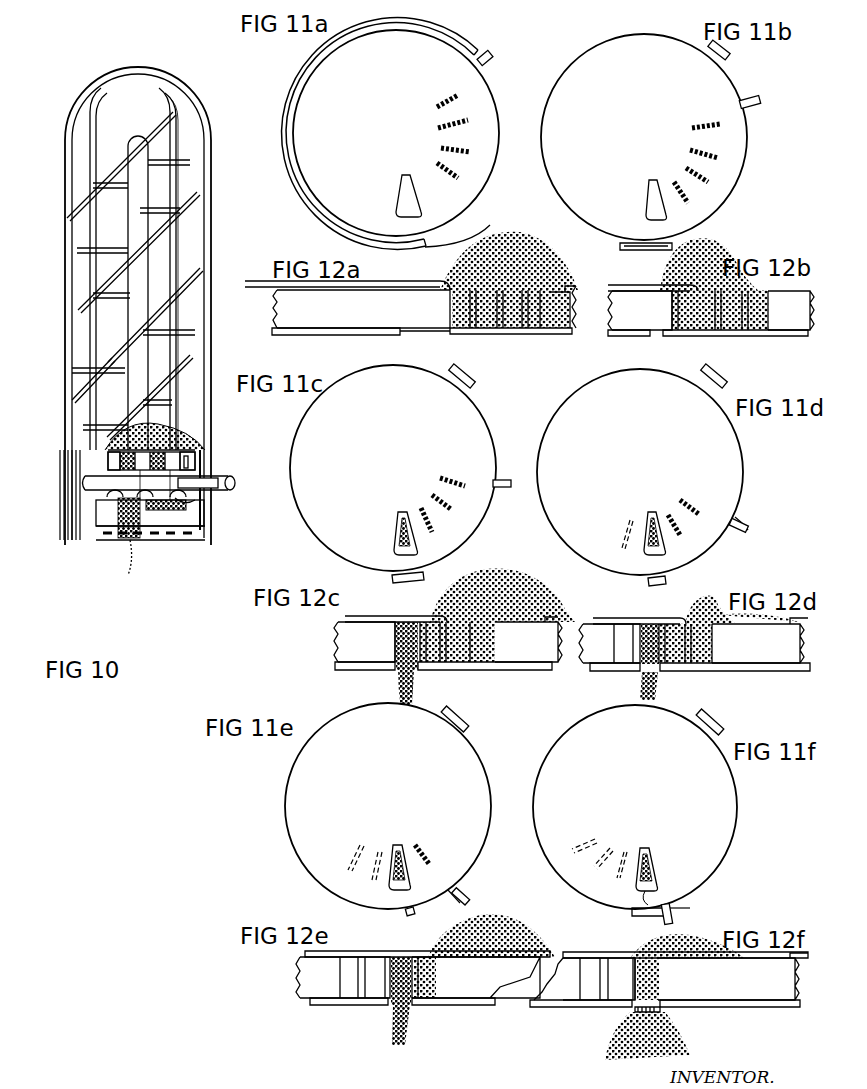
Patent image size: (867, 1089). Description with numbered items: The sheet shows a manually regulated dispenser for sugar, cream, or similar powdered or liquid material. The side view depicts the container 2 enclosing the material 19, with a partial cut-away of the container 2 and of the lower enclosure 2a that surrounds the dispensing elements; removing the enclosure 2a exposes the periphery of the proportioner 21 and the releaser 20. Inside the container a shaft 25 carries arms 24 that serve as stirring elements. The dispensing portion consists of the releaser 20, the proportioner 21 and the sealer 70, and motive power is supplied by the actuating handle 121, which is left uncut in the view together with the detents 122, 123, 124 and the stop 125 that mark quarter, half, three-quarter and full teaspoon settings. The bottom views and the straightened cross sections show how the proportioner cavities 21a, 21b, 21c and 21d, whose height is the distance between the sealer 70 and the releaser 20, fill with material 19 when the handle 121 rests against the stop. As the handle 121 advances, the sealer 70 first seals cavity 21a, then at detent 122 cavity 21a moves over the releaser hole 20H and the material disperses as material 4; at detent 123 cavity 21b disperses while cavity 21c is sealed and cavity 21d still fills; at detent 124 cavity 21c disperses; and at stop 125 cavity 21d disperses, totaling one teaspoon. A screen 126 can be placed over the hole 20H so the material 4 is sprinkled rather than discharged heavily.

In FIG. 10, the container 2 is at (65, 265).
In FIG. 10, the lower enclosure 2a is at (80, 478).
In FIG. 11A, the lower enclosure 2a is at (480, 50).
In FIG. 11B, the lower enclosure 2a is at (728, 60).
In FIG. 11C, the lower enclosure 2a is at (462, 376).
In FIG. 11D, the lower enclosure 2a is at (714, 376).
In FIG. 11E, the lower enclosure 2a is at (455, 719).
In FIG. 11F, the lower enclosure 2a is at (645, 917).
In FIG. 10, the dispersed material 4 is at (140, 540).
In FIG. 12C, the dispersed material 4 is at (398, 690).
In FIG. 12D, the dispersed material 4 is at (660, 695).
In FIG. 12E, the dispersed material 4 is at (410, 1038).
In FIG. 12F, the dispersed material 4 is at (650, 1045).
In FIG. 10, the material 19 is at (195, 222).
In FIG. 12A, the material 19 is at (509, 280).
In FIG. 12B, the material 19 is at (714, 284).
In FIG. 12C, the material 19 is at (497, 615).
In FIG. 12D, the material 19 is at (730, 629).
In FIG. 12E, the material 19 is at (484, 956).
In FIG. 12F, the material 19 is at (687, 967).
In FIG. 10, the releaser 20 is at (108, 522).
In FIG. 10, the releaser hole 20H is at (130, 540).
In FIG. 11A, the releaser hole 20H is at (403, 205).
In FIG. 11B, the releaser hole 20H is at (648, 205).
In FIG. 12A, the releaser hole 20H is at (400, 336).
In FIG. 12B, the releaser hole 20H is at (660, 336).
In FIG. 11C, the releaser hole 20H is at (400, 540).
In FIG. 12C, the releaser hole 20H is at (395, 672).
In FIG. 11D, the releaser hole 20H is at (650, 548).
In FIG. 12D, the releaser hole 20H is at (640, 673).
In FIG. 11E, the releaser hole 20H is at (395, 890).
In FIG. 12E, the releaser hole 20H is at (402, 1001).
In FIG. 11F, the releaser hole 20H is at (635, 807).
In FIG. 12F, the releaser hole 20H is at (665, 1003).
In FIG. 10, the proportioner 21 is at (108, 460).
In FIG. 12A, the proportioner 21 is at (424, 307).
In FIG. 12B, the proportioner 21 is at (711, 310).
In FIG. 12C, the proportioner 21 is at (448, 639).
In FIG. 12D, the proportioner 21 is at (693, 640).
In FIG. 12E, the proportioner 21 is at (423, 974).
In FIG. 12F, the proportioner 21 is at (671, 976).
In FIG. 10, the proportioner cavity 21a is at (118, 458).
In FIG. 11A, the proportioner cavity 21a is at (460, 178).
In FIG. 11B, the proportioner cavity 21a is at (690, 205).
In FIG. 12A, the proportioner cavity 21a is at (458, 322).
In FIG. 12B, the proportioner cavity 21a is at (683, 322).
In FIG. 11C, the proportioner cavity 21a is at (395, 582).
In FIG. 12C, the proportioner cavity 21a is at (402, 625).
In FIG. 11D, the proportioner cavity 21a is at (620, 548).
In FIG. 12D, the proportioner cavity 21a is at (624, 655).
In FIG. 11E, the proportioner cavity 21a is at (345, 870).
In FIG. 12E, the proportioner cavity 21a is at (345, 998).
In FIG. 11F, the proportioner cavity 21a is at (572, 852).
In FIG. 12F, the proportioner cavity 21a is at (572, 1000).
In FIG. 10, the proportioner cavity 21b is at (152, 502).
In FIG. 11A, the proportioner cavity 21b is at (472, 152).
In FIG. 11B, the proportioner cavity 21b is at (710, 182).
In FIG. 12A, the proportioner cavity 21b is at (488, 322).
In FIG. 12B, the proportioner cavity 21b is at (710, 325).
In FIG. 11C, the proportioner cavity 21b is at (434, 535).
In FIG. 12C, the proportioner cavity 21b is at (432, 650).
In FIG. 11D, the proportioner cavity 21b is at (650, 578).
In FIG. 12D, the proportioner cavity 21b is at (648, 660).
In FIG. 11E, the proportioner cavity 21b is at (372, 882).
In FIG. 12E, the proportioner cavity 21b is at (372, 998).
In FIG. 11F, the proportioner cavity 21b is at (594, 868).
In FIG. 12F, the proportioner cavity 21b is at (598, 1000).
In FIG. 10, the proportioner cavity 21c is at (176, 505).
In FIG. 11A, the proportioner cavity 21c is at (470, 120).
In FIG. 11B, the proportioner cavity 21c is at (720, 158).
In FIG. 12A, the proportioner cavity 21c is at (515, 322).
In FIG. 12B, the proportioner cavity 21c is at (738, 328).
In FIG. 11C, the proportioner cavity 21c is at (453, 512).
In FIG. 12C, the proportioner cavity 21c is at (460, 652).
In FIG. 11D, the proportioner cavity 21c is at (682, 540).
In FIG. 12D, the proportioner cavity 21c is at (678, 655).
In FIG. 11E, the proportioner cavity 21c is at (408, 915).
In FIG. 12E, the proportioner cavity 21c is at (400, 921).
In FIG. 11F, the proportioner cavity 21c is at (618, 882).
In FIG. 12F, the proportioner cavity 21c is at (622, 1000).
In FIG. 10, the proportioner cavity 21d is at (195, 470).
In FIG. 11A, the proportioner cavity 21d is at (462, 95).
In FIG. 11B, the proportioner cavity 21d is at (722, 124).
In FIG. 12A, the proportioner cavity 21d is at (540, 325).
In FIG. 12B, the proportioner cavity 21d is at (762, 330).
In FIG. 11C, the proportioner cavity 21d is at (468, 487).
In FIG. 11D, the proportioner cavity 21d is at (702, 517).
In FIG. 12D, the proportioner cavity 21d is at (712, 652).
In FIG. 11E, the proportioner cavity 21d is at (430, 868).
In FIG. 12E, the proportioner cavity 21d is at (425, 1005).
In FIG. 11F, the proportioner cavity 21d is at (645, 908).
In FIG. 10, the arms 24 is at (97, 290).
In FIG. 10, the shaft 25 is at (130, 165).
In FIG. 10, the sealer 70 is at (150, 445).
In FIG. 12A, the sealer 70 is at (440, 280).
In FIG. 12B, the sealer 70 is at (690, 284).
In FIG. 12C, the sealer 70 is at (442, 615).
In FIG. 12D, the sealer 70 is at (683, 618).
In FIG. 10, the actuating handle 121 is at (222, 483).
In FIG. 11A, the actuating handle 121 is at (492, 58).
In FIG. 11B, the actuating handle 121 is at (758, 97).
In FIG. 11C, the actuating handle 121 is at (512, 486).
In FIG. 11D, the actuating handle 121 is at (750, 530).
In FIG. 11E, the actuating handle 121 is at (466, 902).
In FIG. 11F, the actuating handle 121 is at (673, 922).
In FIG. 10, the detent 122 is at (195, 498).
In FIG. 11C, the detent 122 is at (497, 480).
In FIG. 10, the detent 123 is at (170, 512).
In FIG. 11D, the detent 123 is at (735, 517).
In FIG. 10, the detent 124 is at (110, 498).
In FIG. 11E, the detent 124 is at (462, 892).
In FIG. 10, the stop 125 is at (100, 488).
In FIG. 11F, the stop 125 is at (690, 906).
In FIG. 10, the screen 126 is at (72, 540).
In FIG. 12F, the screen 126 is at (665, 1012).